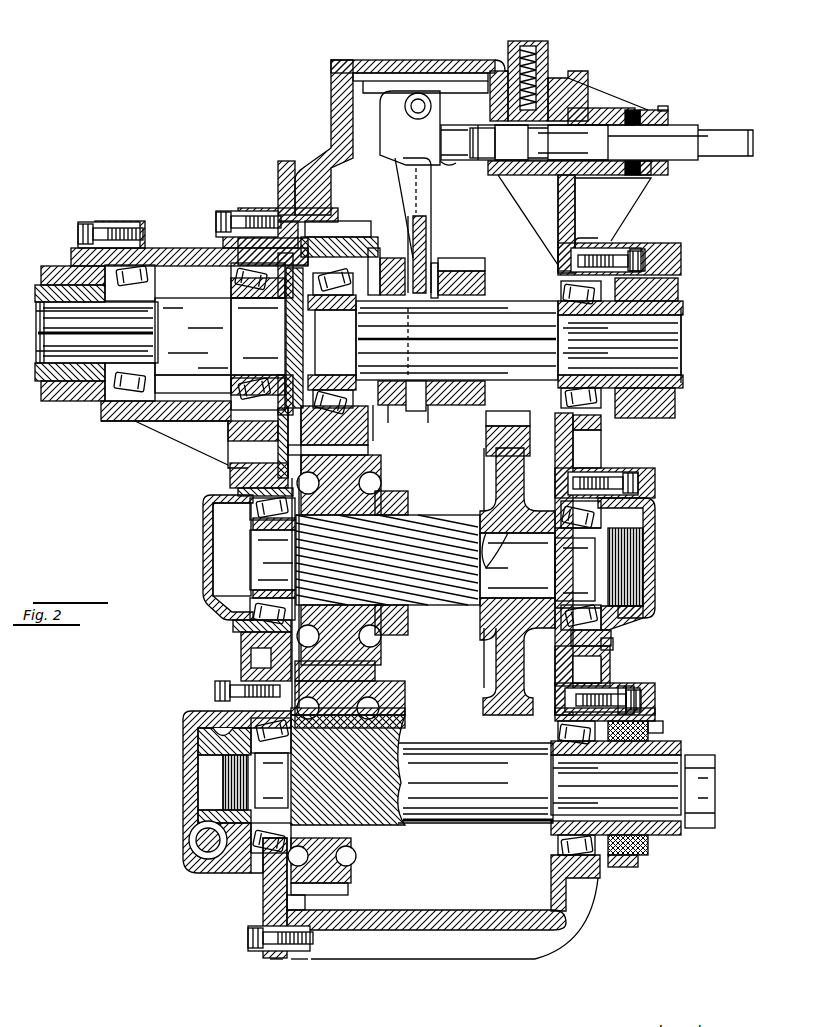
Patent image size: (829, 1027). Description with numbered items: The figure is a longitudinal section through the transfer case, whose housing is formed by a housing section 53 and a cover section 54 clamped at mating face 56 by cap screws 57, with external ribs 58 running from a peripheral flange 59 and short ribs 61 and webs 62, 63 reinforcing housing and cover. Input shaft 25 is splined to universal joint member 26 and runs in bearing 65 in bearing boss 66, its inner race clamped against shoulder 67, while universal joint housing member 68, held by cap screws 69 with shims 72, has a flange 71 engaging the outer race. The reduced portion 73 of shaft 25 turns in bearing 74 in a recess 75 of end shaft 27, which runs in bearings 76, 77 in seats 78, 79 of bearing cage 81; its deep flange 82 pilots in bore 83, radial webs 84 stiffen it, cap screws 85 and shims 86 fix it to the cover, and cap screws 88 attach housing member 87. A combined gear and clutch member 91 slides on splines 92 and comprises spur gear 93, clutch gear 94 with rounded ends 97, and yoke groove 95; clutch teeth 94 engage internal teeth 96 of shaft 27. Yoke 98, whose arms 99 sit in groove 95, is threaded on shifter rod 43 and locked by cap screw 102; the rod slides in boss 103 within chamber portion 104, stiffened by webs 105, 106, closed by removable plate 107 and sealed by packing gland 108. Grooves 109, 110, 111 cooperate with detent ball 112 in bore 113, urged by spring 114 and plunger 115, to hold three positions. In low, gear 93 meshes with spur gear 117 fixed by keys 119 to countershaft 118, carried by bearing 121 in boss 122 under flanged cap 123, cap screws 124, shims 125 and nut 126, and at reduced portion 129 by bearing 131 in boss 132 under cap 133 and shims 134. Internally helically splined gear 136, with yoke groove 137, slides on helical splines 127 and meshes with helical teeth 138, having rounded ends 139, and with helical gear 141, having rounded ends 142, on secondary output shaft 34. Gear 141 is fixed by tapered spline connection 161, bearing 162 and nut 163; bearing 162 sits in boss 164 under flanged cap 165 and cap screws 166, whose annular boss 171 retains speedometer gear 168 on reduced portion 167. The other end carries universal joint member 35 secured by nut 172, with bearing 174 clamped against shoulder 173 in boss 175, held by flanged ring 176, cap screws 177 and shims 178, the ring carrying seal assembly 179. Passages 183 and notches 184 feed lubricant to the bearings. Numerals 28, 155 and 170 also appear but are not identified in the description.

The removable plate 107 is at (400, 52).
The chamber portion 104 is at (438, 85).
The bore 113 is at (505, 36).
The spring 114 is at (522, 40).
The plunger 115 is at (548, 66).
The detent ball 112 is at (565, 102).
The boss 103 is at (625, 102).
The web 105 is at (583, 79).
The packing gland 108 is at (648, 107).
The cap screw 102 is at (405, 118).
The shifter rod 43 is at (480, 117).
The annular groove 110 is at (491, 143).
The annular groove 111 is at (559, 143).
The annular groove 109 is at (456, 152).
The web 106 is at (540, 193).
The short ribs 61 is at (598, 196).
The yoke 98 is at (420, 215).
The bevelled and rounded ends 139 is at (350, 220).
The helical gear teeth 138 is at (327, 200).
The cover section 54 is at (280, 155).
The cap screws 85 is at (207, 205).
The shims 86 is at (247, 205).
The cap screws 88 is at (68, 226).
The bearing seat 78 is at (140, 250).
The bearing seat 79 is at (225, 268).
The bearing 76 is at (145, 283).
The recess 75 is at (280, 300).
The input shaft 28 is at (38, 375).
The end shaft 27 is at (178, 360).
The bearing 77 is at (225, 385).
The housing member 87 is at (78, 400).
The radial webs 84 is at (155, 420).
The bearing cage 81 is at (190, 435).
The bore 83 is at (230, 437).
The deep flange 82 is at (240, 458).
The passages 183 is at (238, 485).
The reduced portion 73 is at (332, 321).
The antifriction bearing 74 is at (334, 391).
The internal teeth 96 is at (372, 255).
The spur gear 93 is at (455, 250).
The combined gear and clutch member 91 is at (426, 262).
The splines 92 is at (488, 295).
The enlarged arms 99 is at (431, 401).
The annular yoke groove 95 is at (420, 405).
The clutch gear 94 is at (385, 415).
The rounded-off portion 97 is at (370, 433).
The shoulder 67 is at (552, 298).
The universal joint member 26 is at (676, 300).
The anti-friction bearing 65 is at (552, 387).
The input shaft 25 is at (660, 385).
The universal joint housing member 68 is at (668, 272).
The flange 71 is at (615, 243).
The shims 72 is at (603, 240).
The cap screws 69 is at (640, 250).
The bearing boss 66 is at (600, 430).
The flanged cap 133 is at (195, 578).
The notches 184 is at (232, 549).
The reduced portion 129 is at (255, 555).
The bearing 131 is at (250, 592).
The shims 134 is at (240, 622).
The boss 132 is at (240, 640).
The webs 63 is at (240, 660).
The helical splines 127 is at (448, 595).
The internally helically splined gear 136 is at (367, 665).
The yoke groove 137 is at (385, 625).
The spur gear 117 is at (490, 657).
The countershaft 118 is at (530, 573).
The keys 119 is at (495, 530).
The bearing 121 is at (578, 568).
The cap screws 124 is at (636, 478).
The flanged cap 123 is at (647, 580).
The nut 126 is at (637, 602).
The shims 125 is at (603, 630).
The bearing boss 122 is at (602, 640).
The cap screws 177 is at (640, 700).
The shims 178 is at (600, 680).
The flanged ring 176 is at (633, 684).
The flanged cap 165 is at (180, 705).
The cap screws 166 is at (208, 685).
The speedometer gear 168 is at (192, 742).
The reduced portion 167 is at (192, 767).
The nut 163 is at (215, 795).
The annular boss 171 is at (192, 808).
The bearing boss 164 is at (232, 860).
The bearing 162 is at (265, 742).
The tapered spline connection 161 is at (300, 735).
The secondary output shaft 34 is at (510, 815).
The shoulder 173 is at (543, 762).
The nut 172 is at (700, 755).
The bearing 174 is at (553, 722).
The seal assembly 179 is at (640, 724).
The retainer 170 is at (645, 735).
The universal joint member 35 is at (650, 835).
The bearing boss 175 is at (582, 873).
The housing section 53 is at (535, 949).
The strengthening flanges 58 is at (465, 950).
The helical gear 141 is at (345, 870).
The bevelled and rounded ends 142 is at (345, 880).
The wall 155 is at (288, 897).
The webs 62 is at (250, 878).
The cap screws 57 is at (240, 930).
The mating face 56 is at (270, 950).
The peripheral flange 59 is at (290, 950).